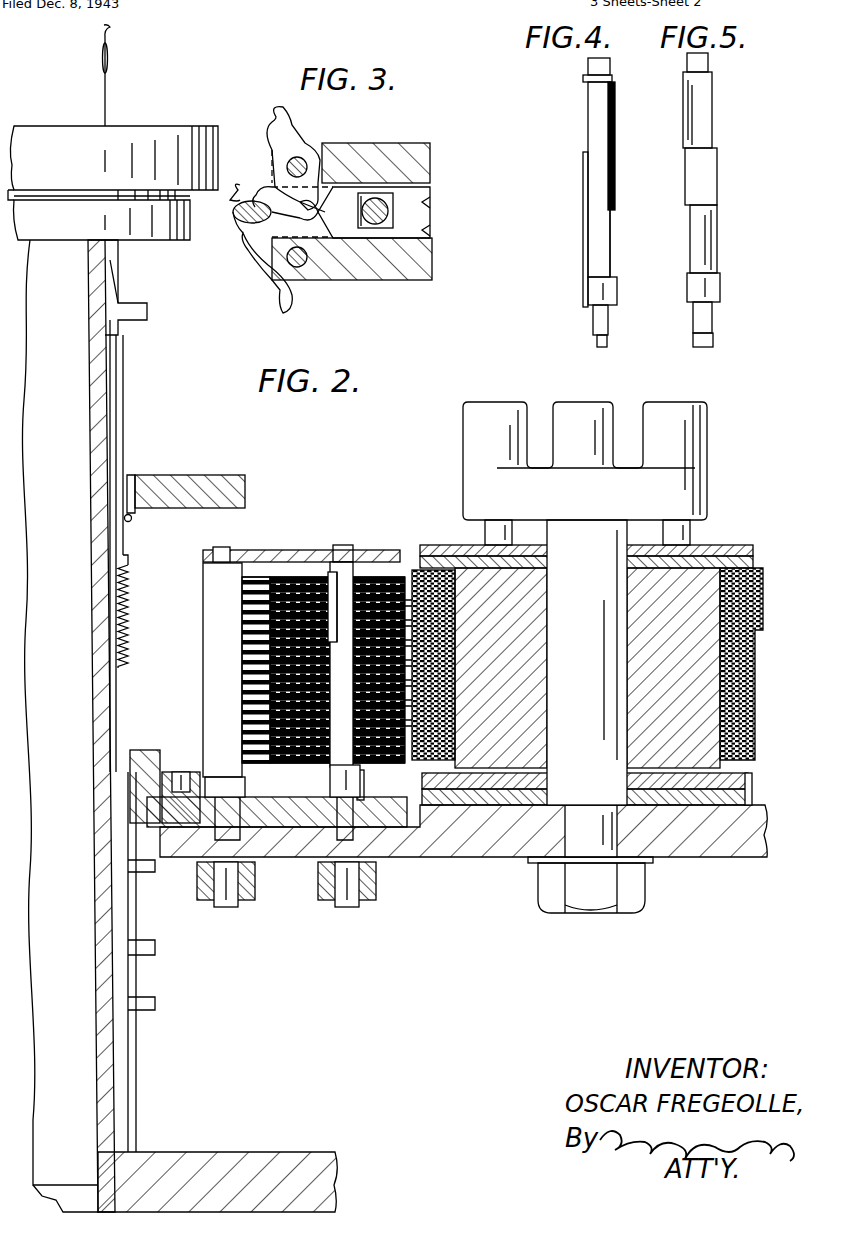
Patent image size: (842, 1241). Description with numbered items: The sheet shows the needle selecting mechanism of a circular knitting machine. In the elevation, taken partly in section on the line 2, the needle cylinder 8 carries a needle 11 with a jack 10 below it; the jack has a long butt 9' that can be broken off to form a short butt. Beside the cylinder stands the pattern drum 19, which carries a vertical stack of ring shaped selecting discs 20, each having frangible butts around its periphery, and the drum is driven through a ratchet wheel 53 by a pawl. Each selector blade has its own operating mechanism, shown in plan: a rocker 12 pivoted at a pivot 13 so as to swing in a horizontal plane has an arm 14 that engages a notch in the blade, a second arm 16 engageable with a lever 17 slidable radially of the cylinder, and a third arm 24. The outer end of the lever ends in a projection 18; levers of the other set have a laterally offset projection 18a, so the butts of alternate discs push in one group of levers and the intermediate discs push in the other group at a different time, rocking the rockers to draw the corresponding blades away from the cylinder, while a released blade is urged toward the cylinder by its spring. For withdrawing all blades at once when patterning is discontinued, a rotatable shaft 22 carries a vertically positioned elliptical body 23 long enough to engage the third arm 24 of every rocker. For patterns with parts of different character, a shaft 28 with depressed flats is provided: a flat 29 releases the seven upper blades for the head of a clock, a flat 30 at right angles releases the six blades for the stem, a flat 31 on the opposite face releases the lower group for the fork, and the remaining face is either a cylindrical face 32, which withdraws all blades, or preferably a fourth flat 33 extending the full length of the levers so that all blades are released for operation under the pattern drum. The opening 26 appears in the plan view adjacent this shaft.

In FIG. 3, the section line 2 is at (422, 279).
In FIG. 2, the needle cylinder 8 is at (90, 532).
In FIG. 2, the long butt 9' is at (149, 951).
In FIG. 2, the jack 10 is at (117, 616).
In FIG. 2, the needle 11 is at (108, 263).
In FIG. 3, the rocker 12 is at (272, 152).
In FIG. 3, the pivot 13 is at (310, 147).
In FIG. 3, the arm 14 is at (270, 116).
In FIG. 3, the second arm 16 is at (320, 213).
In FIG. 3, the lever 17 is at (407, 195).
In FIG. 3, the projection 18 is at (432, 205).
In FIG. 3, the projection 18a is at (432, 233).
In FIG. 2, the pattern drum 19 is at (690, 590).
In FIG. 2, the selecting discs 20 is at (410, 560).
In FIG. 2, the rotatable shaft 22 is at (220, 548).
In FIG. 2, the elliptical body 23 is at (206, 649).
In FIG. 3, the elliptical body 23 is at (240, 223).
In FIG. 3, the third arm 24 is at (250, 187).
In FIG. 3, the opening 26 is at (388, 215).
In FIG. 2, the shaft 28 is at (346, 548).
In FIG. 3, the shaft 28 is at (380, 224).
In FIG. 4, the shaft 28 is at (590, 329).
In FIG. 5, the shaft 28 is at (698, 327).
In FIG. 2, the flat 29 is at (332, 575).
In FIG. 4, the flat 29 is at (588, 124).
In FIG. 5, the flat 29 is at (712, 118).
In FIG. 2, the depressed flat 30 is at (330, 781).
In FIG. 5, the depressed flat 30 is at (715, 181).
In FIG. 4, the depressed flat 31 is at (612, 238).
In FIG. 5, the depressed flat 31 is at (690, 243).
In FIG. 3, the cylindrical face 32 is at (372, 224).
In FIG. 4, the cylindrical face 32 is at (585, 212).
In FIG. 2, the fourth flat 33 is at (345, 585).
In FIG. 4, the fourth flat 33 is at (600, 185).
In FIG. 2, the ratchet wheel 53 is at (752, 790).